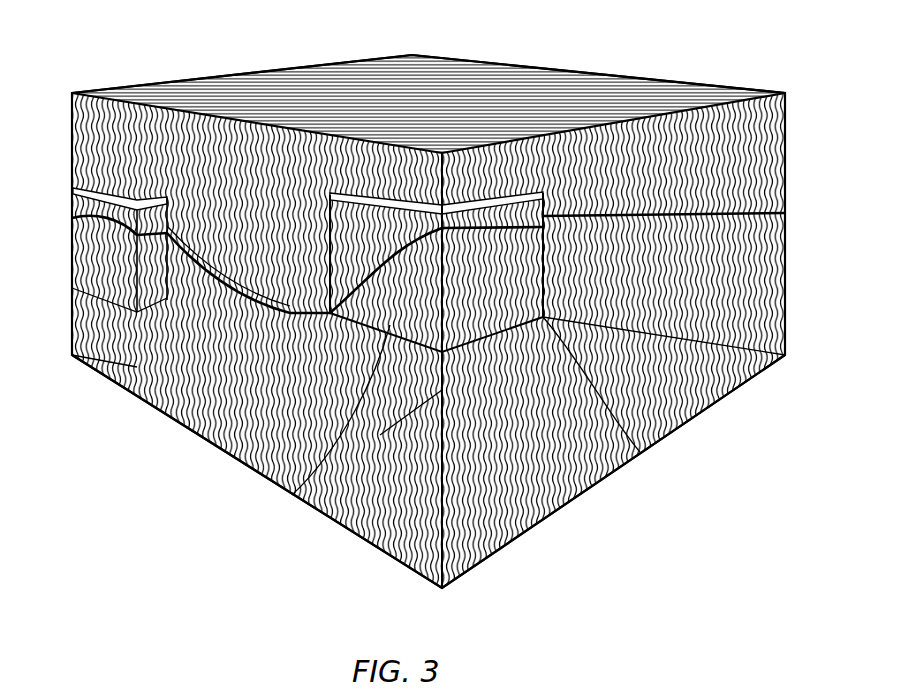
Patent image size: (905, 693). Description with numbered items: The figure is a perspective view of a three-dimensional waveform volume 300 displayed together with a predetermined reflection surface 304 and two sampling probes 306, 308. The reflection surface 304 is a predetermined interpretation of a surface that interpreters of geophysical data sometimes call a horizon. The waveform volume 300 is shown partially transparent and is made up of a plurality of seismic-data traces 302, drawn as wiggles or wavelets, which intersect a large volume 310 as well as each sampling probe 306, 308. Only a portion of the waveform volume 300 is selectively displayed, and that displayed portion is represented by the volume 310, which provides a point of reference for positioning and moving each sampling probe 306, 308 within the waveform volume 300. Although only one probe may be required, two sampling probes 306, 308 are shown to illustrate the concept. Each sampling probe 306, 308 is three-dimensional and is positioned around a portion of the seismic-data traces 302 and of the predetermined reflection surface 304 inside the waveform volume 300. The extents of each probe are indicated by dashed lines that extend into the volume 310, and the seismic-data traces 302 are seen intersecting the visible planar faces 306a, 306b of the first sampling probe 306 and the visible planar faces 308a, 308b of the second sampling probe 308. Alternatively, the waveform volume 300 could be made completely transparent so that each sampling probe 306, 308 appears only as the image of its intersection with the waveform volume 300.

The waveform volume 300 is at (638, 62).
The seismic-data traces 302 is at (752, 268).
The predetermined reflection surface 304 is at (750, 208).
The sampling probe 306 is at (73, 177).
The visible planar face 306a is at (72, 271).
The visible planar face 306b is at (112, 372).
The sampling probe 308 is at (465, 205).
The visible planar face 308a is at (292, 495).
The visible planar face 308b is at (643, 452).
The volume 310 is at (298, 67).